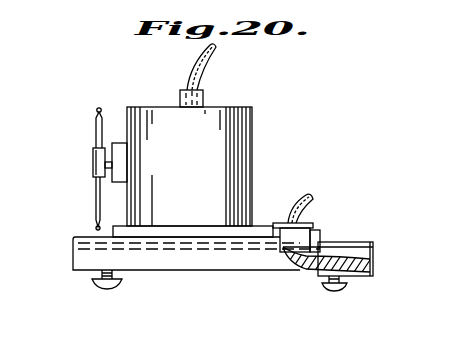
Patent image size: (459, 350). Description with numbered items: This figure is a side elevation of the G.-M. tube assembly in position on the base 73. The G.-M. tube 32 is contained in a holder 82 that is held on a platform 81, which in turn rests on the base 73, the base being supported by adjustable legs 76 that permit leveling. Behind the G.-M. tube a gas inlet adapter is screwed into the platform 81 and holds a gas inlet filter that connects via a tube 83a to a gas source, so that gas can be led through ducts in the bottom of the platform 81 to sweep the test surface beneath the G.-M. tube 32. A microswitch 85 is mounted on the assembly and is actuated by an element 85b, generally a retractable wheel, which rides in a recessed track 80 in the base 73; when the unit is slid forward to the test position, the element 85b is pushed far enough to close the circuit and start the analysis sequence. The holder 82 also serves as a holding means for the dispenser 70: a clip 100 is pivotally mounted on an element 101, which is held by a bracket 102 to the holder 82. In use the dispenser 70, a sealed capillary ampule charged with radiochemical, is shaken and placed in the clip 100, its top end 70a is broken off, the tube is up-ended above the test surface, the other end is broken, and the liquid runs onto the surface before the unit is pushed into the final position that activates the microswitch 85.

The G.-M. tube 32 is at (205, 97).
The dispenser 70 is at (88, 127).
The breakable end 70a is at (93, 126).
The base 73 is at (199, 285).
The adjustable legs 76 is at (106, 289).
The recessed track 80 is at (375, 258).
The platform 81 is at (259, 229).
The holder 82 is at (247, 143).
The tube 83a is at (307, 197).
The microswitch 85 is at (322, 229).
The element 85b is at (303, 256).
The clip 100 is at (93, 152).
The element 101 is at (105, 166).
The bracket 102 is at (113, 184).